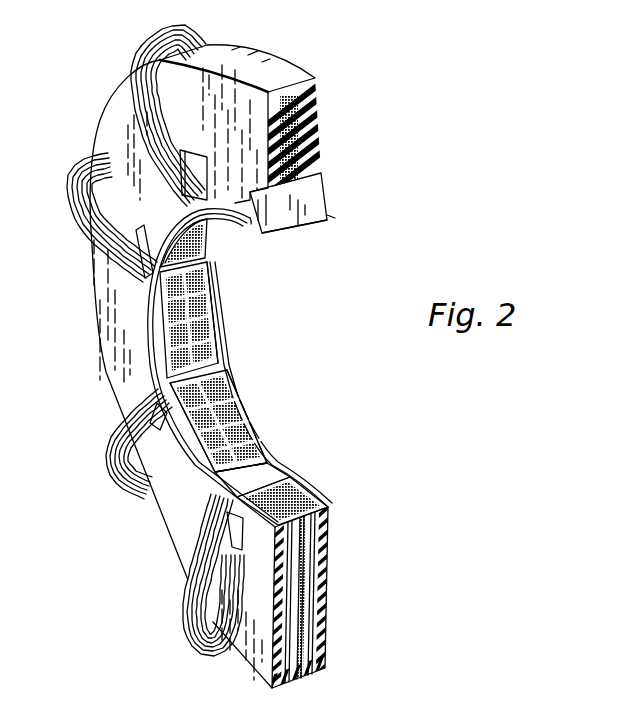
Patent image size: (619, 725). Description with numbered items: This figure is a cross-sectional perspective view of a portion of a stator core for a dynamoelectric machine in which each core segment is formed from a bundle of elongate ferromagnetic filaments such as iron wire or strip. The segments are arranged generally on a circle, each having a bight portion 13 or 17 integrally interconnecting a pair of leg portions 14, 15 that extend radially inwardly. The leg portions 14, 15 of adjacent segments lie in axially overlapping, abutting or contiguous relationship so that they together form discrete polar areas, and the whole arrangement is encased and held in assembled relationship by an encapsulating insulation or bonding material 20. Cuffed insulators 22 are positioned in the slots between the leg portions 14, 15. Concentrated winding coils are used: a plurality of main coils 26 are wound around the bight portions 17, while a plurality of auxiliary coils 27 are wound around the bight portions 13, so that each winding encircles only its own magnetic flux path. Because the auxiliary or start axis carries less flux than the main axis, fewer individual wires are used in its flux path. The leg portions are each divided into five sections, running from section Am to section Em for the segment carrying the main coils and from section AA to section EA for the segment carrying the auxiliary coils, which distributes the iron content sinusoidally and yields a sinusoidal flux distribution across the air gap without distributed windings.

The bight portion 13 is at (310, 637).
The leg portion 14 is at (237, 406).
The leg portion 15 is at (222, 425).
The bight portion 17 is at (323, 116).
The encapsulating insulation or bonding material 20 is at (117, 119).
The cuffed insulator 22 is at (182, 148).
The main coil 26 is at (203, 32).
The auxiliary coil 27 is at (70, 181).
The section of segment 11 leg portion AA is at (218, 378).
The section of segment 11 leg portion EA is at (257, 445).
The section of segment 12 leg portion Em is at (187, 405).
The section of segment 12 leg portion Am is at (227, 467).